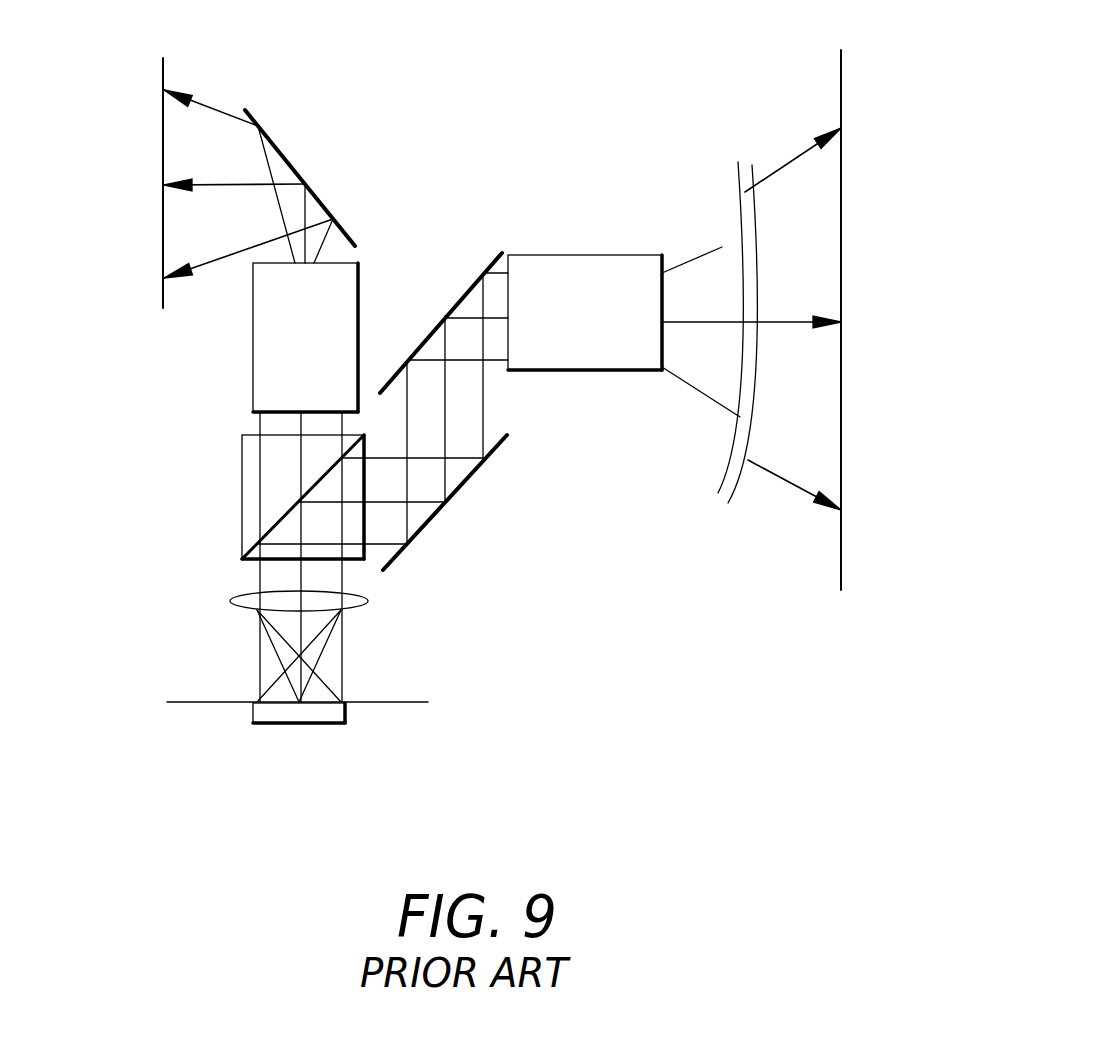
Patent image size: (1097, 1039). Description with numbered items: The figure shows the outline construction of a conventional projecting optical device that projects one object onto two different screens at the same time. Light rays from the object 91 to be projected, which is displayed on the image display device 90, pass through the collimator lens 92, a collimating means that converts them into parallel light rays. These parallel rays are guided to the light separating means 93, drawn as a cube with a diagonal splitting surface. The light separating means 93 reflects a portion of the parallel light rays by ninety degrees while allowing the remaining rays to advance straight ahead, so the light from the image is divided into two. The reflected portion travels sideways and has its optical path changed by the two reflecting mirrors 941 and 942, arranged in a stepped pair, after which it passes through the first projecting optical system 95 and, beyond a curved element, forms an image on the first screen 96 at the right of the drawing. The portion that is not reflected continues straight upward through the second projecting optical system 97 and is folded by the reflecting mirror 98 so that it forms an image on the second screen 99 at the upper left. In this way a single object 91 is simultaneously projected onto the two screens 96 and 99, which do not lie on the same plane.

The image display device 90 is at (345, 723).
The object 91 is at (268, 700).
The collimator lens 92 is at (370, 601).
The light separating means 93 is at (240, 492).
The reflecting mirror 941 is at (437, 513).
The reflecting mirror 942 is at (465, 287).
The first projecting optical system 95 is at (587, 268).
The first screen 96 is at (841, 82).
The second projecting optical system 97 is at (287, 333).
The reflecting mirror 98 is at (290, 157).
The second screen 99 is at (162, 228).